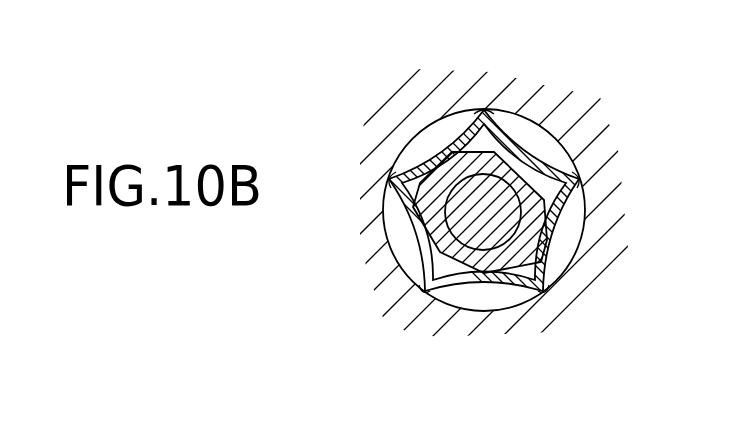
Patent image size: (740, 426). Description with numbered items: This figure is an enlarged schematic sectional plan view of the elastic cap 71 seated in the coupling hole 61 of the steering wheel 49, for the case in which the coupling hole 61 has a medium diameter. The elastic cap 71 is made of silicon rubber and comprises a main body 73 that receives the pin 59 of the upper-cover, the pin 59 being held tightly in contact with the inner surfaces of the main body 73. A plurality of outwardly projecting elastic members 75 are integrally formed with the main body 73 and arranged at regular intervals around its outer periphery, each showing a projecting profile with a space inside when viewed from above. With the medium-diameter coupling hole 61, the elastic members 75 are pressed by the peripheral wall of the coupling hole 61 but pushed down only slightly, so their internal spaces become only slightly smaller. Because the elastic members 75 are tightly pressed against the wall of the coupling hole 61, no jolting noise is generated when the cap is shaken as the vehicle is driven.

The steering wheel 49 is at (666, 187).
The coupling hole 61 is at (558, 142).
The elastic members 75 is at (480, 110).
The elastic cap 71 is at (510, 292).
The main body 73 is at (481, 268).
The pin 59 is at (443, 208).